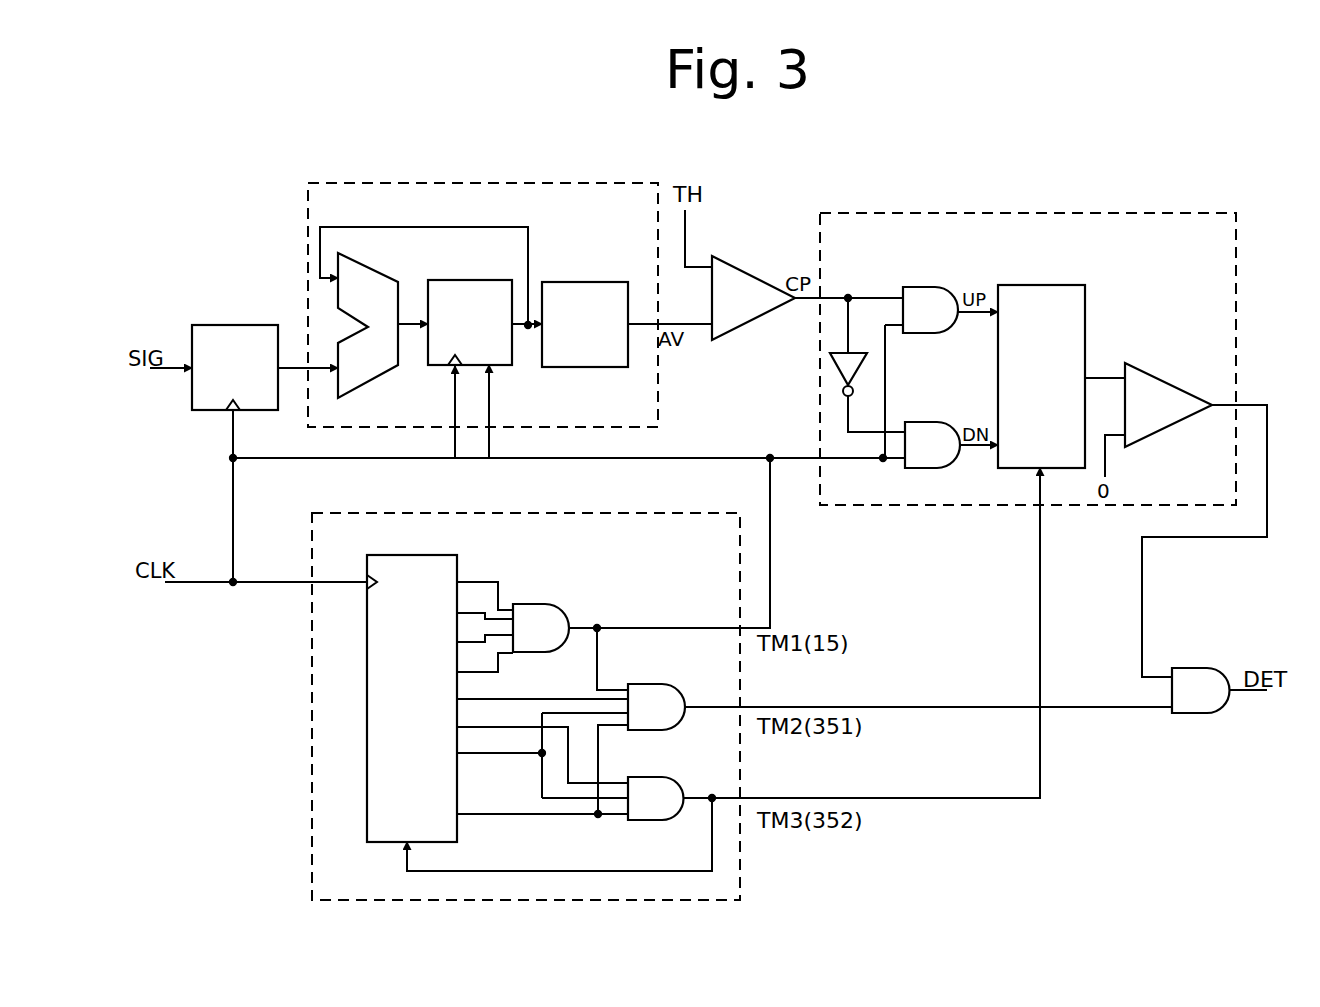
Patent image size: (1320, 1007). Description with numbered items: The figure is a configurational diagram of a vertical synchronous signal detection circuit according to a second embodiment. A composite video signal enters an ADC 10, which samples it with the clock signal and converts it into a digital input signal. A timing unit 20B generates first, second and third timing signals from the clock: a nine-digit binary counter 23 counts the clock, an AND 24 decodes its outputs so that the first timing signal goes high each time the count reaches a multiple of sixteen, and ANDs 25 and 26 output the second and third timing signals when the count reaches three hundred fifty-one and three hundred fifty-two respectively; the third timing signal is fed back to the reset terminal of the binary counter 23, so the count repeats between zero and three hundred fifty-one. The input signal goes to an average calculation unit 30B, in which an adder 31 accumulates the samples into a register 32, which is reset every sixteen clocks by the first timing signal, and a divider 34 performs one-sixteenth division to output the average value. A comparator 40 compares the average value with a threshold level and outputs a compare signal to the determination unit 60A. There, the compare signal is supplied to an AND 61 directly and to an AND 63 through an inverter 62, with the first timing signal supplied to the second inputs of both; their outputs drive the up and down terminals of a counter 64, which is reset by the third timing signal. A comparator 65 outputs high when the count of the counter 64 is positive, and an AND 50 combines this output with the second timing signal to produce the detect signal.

The ADC 10 is at (222, 325).
The average calculation unit 30B is at (308, 250).
The adder 31 is at (353, 383).
The register 32 is at (456, 278).
The divider 34 is at (575, 282).
The comparator 40 is at (737, 259).
The determination unit 60A is at (1176, 213).
The AND 61 is at (922, 287).
The inverter 62 is at (859, 353).
The AND 63 is at (926, 422).
The counter 64 is at (1057, 285).
The comparator 65 is at (1158, 377).
The AND 50 is at (1183, 668).
The timing unit 20B is at (312, 667).
The binary counter 23 is at (407, 555).
The AND 24 is at (533, 604).
The AND 25 is at (647, 684).
The AND 26 is at (647, 777).